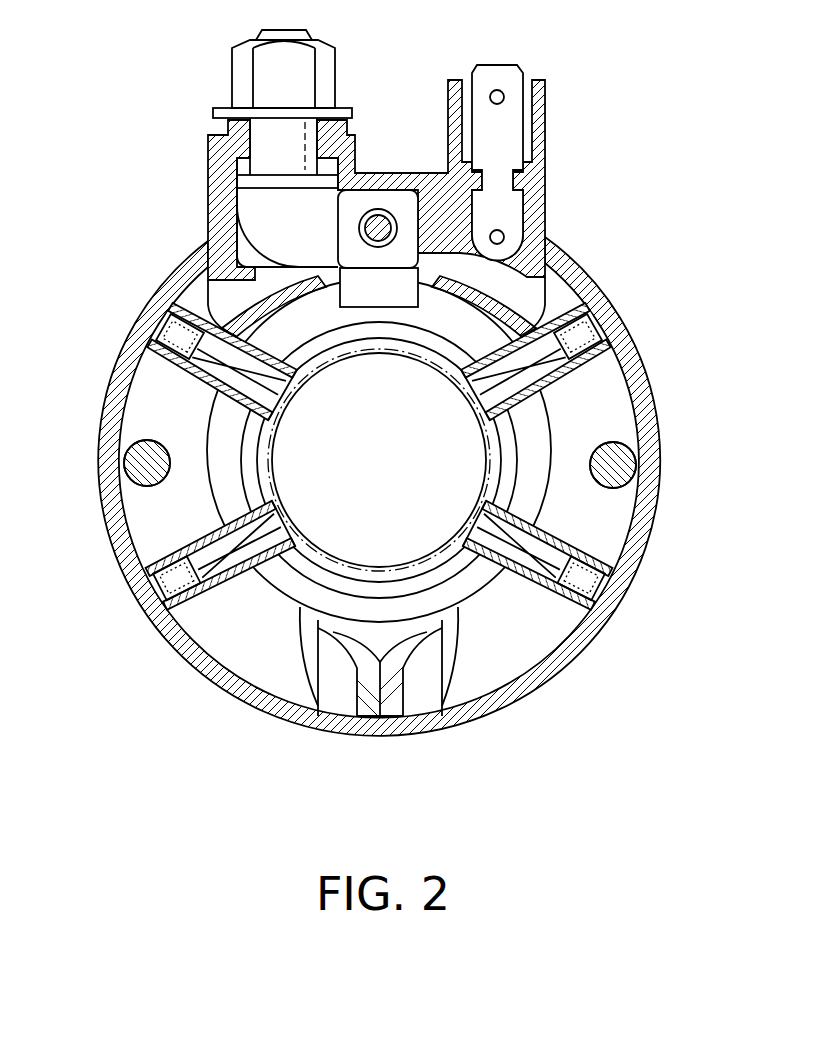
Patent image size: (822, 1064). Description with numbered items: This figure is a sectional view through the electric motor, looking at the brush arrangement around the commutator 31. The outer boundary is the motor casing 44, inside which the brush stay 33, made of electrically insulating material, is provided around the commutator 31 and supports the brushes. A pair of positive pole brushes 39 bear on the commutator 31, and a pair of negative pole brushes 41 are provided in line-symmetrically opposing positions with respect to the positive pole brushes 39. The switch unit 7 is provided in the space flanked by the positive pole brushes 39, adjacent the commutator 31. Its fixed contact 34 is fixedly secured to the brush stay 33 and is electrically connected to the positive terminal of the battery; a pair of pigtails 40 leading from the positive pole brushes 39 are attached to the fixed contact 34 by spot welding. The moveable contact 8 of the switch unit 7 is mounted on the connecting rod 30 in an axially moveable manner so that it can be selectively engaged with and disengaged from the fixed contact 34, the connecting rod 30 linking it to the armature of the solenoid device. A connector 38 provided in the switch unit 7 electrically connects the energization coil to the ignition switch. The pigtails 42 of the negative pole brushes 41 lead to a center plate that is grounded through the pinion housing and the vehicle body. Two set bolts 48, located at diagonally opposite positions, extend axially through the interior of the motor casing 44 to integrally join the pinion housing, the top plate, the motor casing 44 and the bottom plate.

The switch unit 7 is at (403, 88).
The moveable contact 8 is at (405, 198).
The connecting rod 30 is at (398, 222).
The commutator 31 is at (490, 460).
The brush stay 33 is at (186, 614).
The fixed contact 34 is at (265, 205).
The connector 38 is at (522, 68).
The positive pole brushes 39 is at (193, 385).
The pigtails 40 is at (250, 308).
The negative pole brushes 41 is at (214, 578).
The pigtails 42 is at (407, 738).
The motor casing 44 is at (605, 631).
The set bolts 48 is at (133, 484).